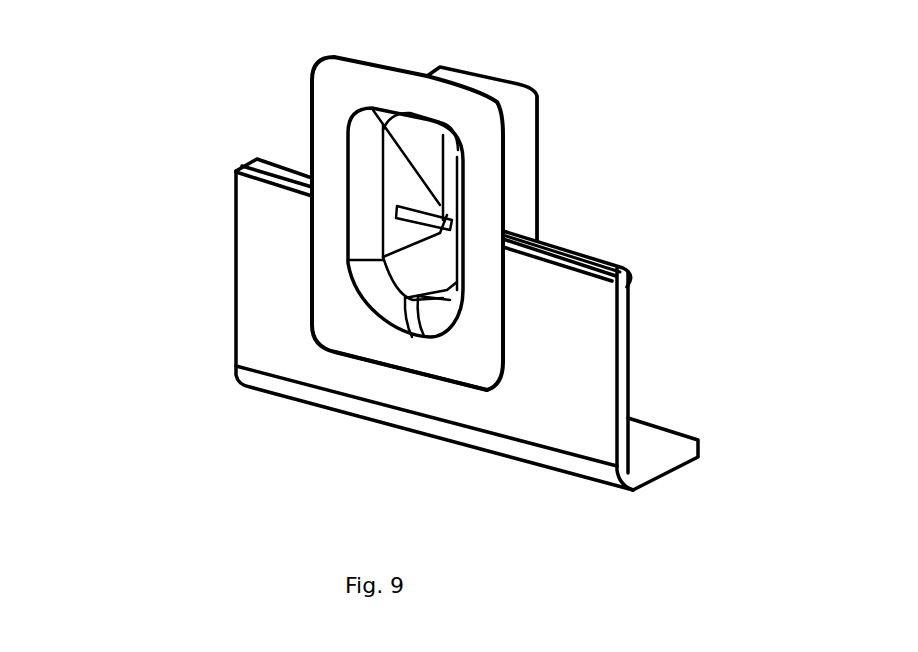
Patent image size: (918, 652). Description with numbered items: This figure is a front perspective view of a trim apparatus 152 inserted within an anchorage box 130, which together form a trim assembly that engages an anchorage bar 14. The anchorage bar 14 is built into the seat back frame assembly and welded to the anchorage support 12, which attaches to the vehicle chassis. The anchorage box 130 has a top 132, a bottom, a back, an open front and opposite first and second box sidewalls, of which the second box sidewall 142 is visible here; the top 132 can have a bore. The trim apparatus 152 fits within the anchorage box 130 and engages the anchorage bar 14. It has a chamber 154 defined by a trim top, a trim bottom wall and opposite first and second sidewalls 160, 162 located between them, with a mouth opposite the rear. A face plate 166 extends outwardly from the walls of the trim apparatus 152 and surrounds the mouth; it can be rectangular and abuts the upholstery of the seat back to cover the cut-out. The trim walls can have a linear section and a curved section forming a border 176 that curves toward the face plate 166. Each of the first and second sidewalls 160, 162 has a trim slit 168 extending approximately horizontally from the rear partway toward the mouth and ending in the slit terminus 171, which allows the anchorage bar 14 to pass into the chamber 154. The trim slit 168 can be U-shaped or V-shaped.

The anchorage support 12 is at (597, 390).
The anchorage bar 14 is at (634, 284).
The anchorage box 130 is at (527, 224).
The top 132 is at (487, 88).
The second box sidewall 142 is at (524, 190).
The trim apparatus 152 is at (380, 343).
The chamber 154 is at (437, 153).
The first sidewall 160 is at (400, 147).
The second sidewall 162 is at (480, 196).
The face plate 166 is at (300, 372).
The trim slit 168 is at (441, 152).
The slit terminus 171 is at (400, 213).
The border 176 is at (327, 268).